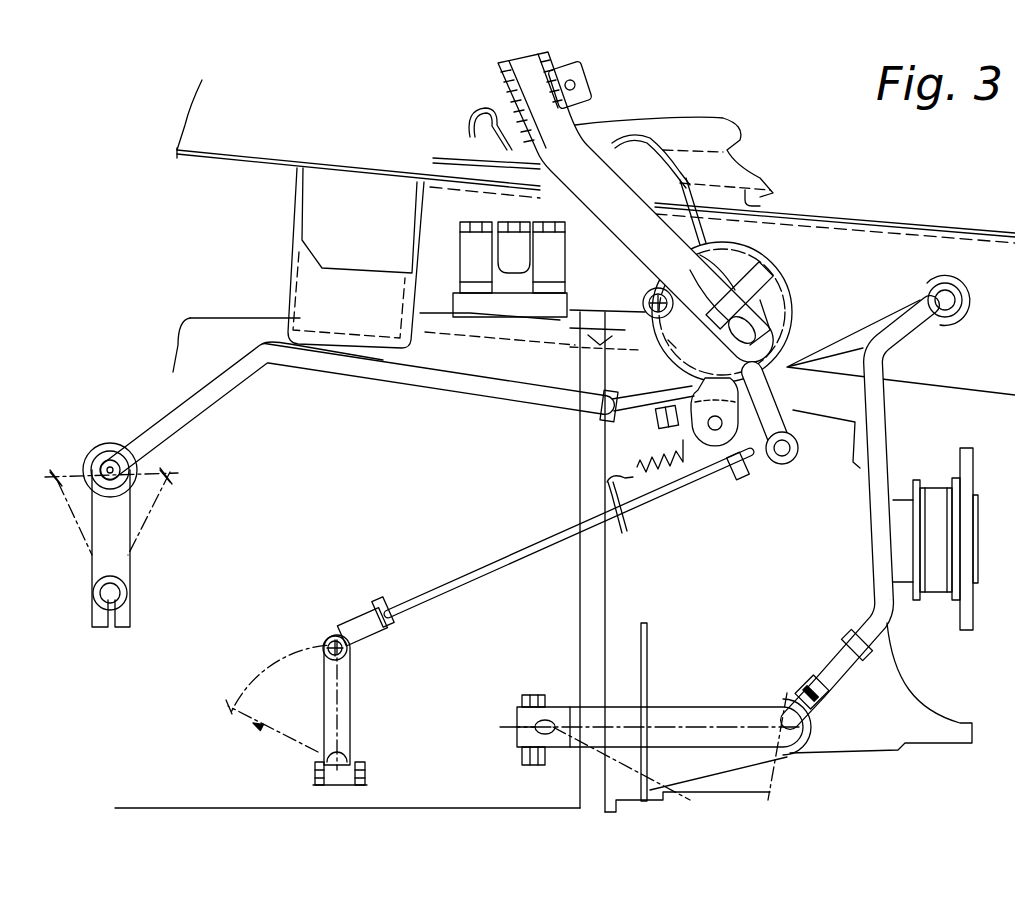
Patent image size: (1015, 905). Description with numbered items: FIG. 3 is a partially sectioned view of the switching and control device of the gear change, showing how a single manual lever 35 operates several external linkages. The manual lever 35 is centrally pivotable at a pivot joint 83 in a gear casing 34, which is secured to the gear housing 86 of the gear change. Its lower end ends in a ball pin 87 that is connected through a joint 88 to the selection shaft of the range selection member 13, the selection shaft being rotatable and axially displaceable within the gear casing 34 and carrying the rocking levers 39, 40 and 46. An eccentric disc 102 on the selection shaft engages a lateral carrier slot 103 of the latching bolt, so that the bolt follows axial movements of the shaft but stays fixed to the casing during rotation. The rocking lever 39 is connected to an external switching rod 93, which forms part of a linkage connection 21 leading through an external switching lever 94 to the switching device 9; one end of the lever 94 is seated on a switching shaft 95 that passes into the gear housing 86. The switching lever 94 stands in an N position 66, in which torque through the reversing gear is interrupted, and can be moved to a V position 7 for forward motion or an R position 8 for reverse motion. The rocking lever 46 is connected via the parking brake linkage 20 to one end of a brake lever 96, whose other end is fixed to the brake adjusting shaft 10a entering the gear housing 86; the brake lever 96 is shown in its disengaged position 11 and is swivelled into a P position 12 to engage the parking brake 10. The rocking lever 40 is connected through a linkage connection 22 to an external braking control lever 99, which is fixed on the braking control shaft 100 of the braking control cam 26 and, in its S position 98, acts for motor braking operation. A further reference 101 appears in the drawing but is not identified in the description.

The V position 7 is at (177, 480).
The R position 8 is at (55, 478).
The switching device 9 is at (137, 587).
The parking brake 10 is at (510, 728).
The brake adjusting shaft 10a is at (545, 720).
The disengaged position 11 is at (720, 720).
The P position 12 is at (613, 763).
The range selection member 13 is at (750, 277).
The parking brake linkage 20 is at (897, 455).
The linkage connection 21 is at (405, 398).
The linkage connection 22 is at (500, 580).
The braking control cam 26 is at (307, 778).
The gear casing 34 is at (788, 270).
The manual lever 35 is at (563, 160).
The rocking lever 39 is at (683, 390).
The rocking lever 40 is at (783, 417).
The rocking lever 46 is at (868, 317).
The N position 66 is at (109, 462).
The pivot joint 83 is at (687, 173).
The gear housing 86 is at (223, 317).
The ball pin 87 is at (750, 330).
The joint 88 is at (787, 367).
The external switching rod 93 is at (495, 387).
The external switching lever 94 is at (117, 533).
The switching shaft 95 is at (123, 600).
The brake lever 96 is at (658, 713).
The S position 98 is at (333, 683).
The external braking control lever 99 is at (347, 725).
The braking control shaft 100 is at (360, 753).
The swing angle 101 is at (240, 732).
The eccentric disc 102 is at (667, 345).
The lateral carrier slot 103 is at (590, 340).